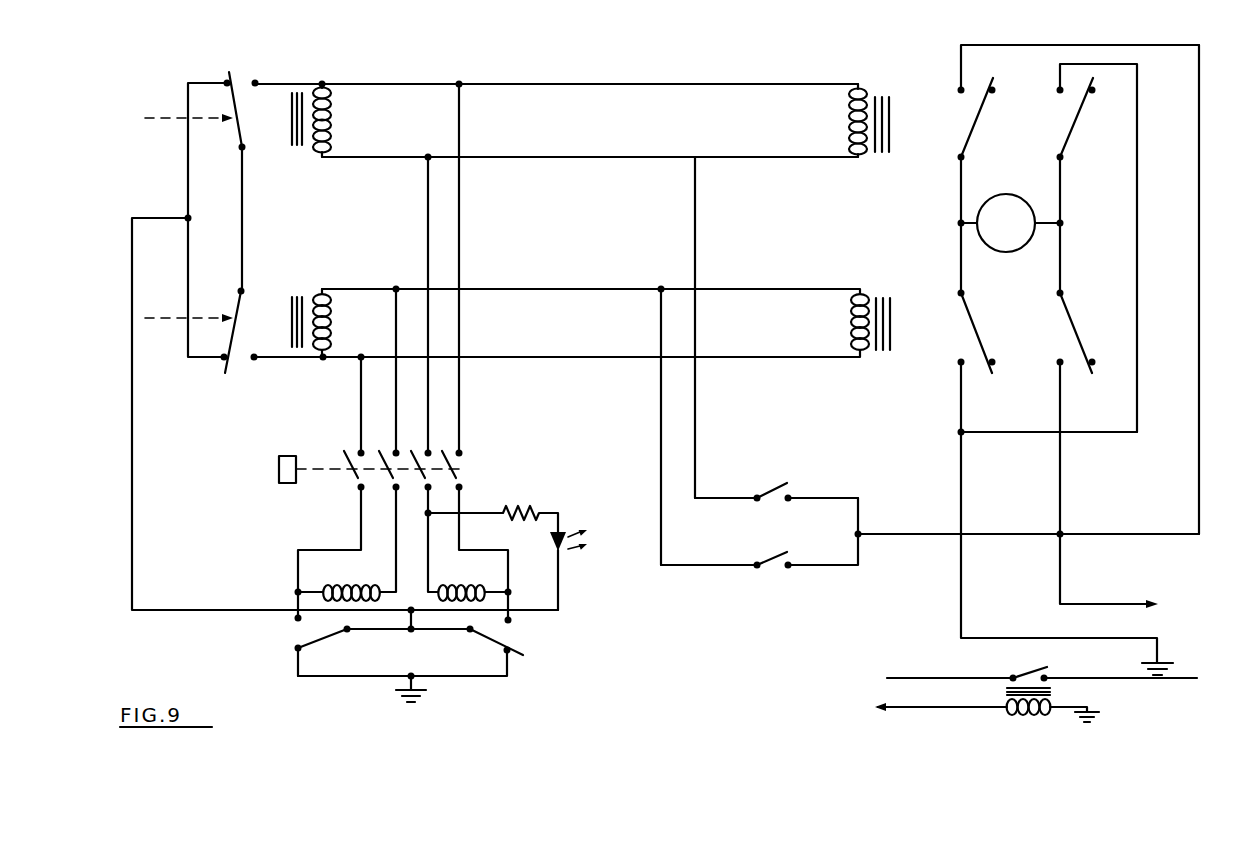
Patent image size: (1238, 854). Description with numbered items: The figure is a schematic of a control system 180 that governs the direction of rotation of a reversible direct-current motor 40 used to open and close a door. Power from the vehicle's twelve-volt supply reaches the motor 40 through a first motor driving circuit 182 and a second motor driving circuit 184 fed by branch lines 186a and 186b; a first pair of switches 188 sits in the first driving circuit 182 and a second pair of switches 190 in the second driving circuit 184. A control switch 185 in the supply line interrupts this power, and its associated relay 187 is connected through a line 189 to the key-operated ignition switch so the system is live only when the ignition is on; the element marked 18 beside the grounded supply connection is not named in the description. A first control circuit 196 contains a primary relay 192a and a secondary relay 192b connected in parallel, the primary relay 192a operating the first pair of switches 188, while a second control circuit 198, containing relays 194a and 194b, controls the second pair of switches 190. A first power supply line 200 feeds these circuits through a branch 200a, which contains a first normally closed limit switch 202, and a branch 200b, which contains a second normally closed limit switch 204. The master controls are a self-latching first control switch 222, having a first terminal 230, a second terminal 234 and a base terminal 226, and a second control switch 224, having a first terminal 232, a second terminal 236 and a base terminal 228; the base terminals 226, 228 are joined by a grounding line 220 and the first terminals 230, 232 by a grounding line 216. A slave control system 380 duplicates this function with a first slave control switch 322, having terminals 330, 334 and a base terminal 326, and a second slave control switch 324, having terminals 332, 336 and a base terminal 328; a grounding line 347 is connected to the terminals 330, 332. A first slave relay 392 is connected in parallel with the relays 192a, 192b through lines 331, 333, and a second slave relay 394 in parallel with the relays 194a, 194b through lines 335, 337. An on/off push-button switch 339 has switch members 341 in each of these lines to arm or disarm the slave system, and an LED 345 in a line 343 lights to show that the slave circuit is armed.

The vehicle ground / system 18 is at (1170, 633).
The reversible D.C. motor 40 is at (1000, 196).
The control system 180 is at (697, 74).
The first motor driving circuit 182 is at (929, 69).
The second motor driving circuit 184 is at (926, 374).
The control switch 185 is at (1027, 672).
The branch line 186a is at (1060, 480).
The branch line 186b is at (1199, 245).
The relay 187 is at (1015, 713).
The first pair of switches 188 is at (1073, 124).
The line 189 is at (896, 710).
The second pair of switches 190 is at (1070, 322).
The primary relay 192a is at (846, 123).
The secondary relay 192b is at (332, 96).
The relay 194a is at (848, 322).
The relay 194b is at (332, 322).
The first control circuit 196 is at (543, 72).
The second control circuit 198 is at (617, 398).
The first power supply line 200 is at (910, 537).
The branch 200a is at (696, 414).
The branch 200b is at (661, 418).
The first normally closed limit switch 202 is at (771, 491).
The second normally closed limit switch 204 is at (771, 557).
The grounding line 216 is at (188, 151).
The grounding line 220 is at (243, 192).
The first control switch 222 is at (237, 118).
The second control switch 224 is at (240, 305).
The base terminal 226 is at (242, 148).
The base terminal 228 is at (242, 290).
The first terminal 230 is at (227, 81).
The first terminal 232 is at (224, 359).
The second terminal 234 is at (256, 81).
The second terminal 236 is at (254, 359).
The first slave control switch 322 is at (500, 643).
The second slave control switch 324 is at (310, 642).
The base terminal 326 is at (470, 632).
The base terminal 328 is at (347, 632).
The first terminal 330 is at (507, 653).
The line 331 is at (428, 400).
The first terminal 332 is at (297, 651).
The line 333 is at (459, 382).
The second terminal 334 is at (511, 621).
The line 335 is at (396, 397).
The second terminal 336 is at (296, 620).
The line 337 is at (361, 380).
The on/off push-button switch 339 is at (279, 463).
The switch members 341 is at (388, 474).
The line 343 is at (132, 522).
The LED 345 is at (563, 538).
The grounding line 347 is at (404, 689).
The slave control system 380 is at (605, 620).
The first slave relay 392 is at (452, 586).
The second slave relay 394 is at (355, 586).